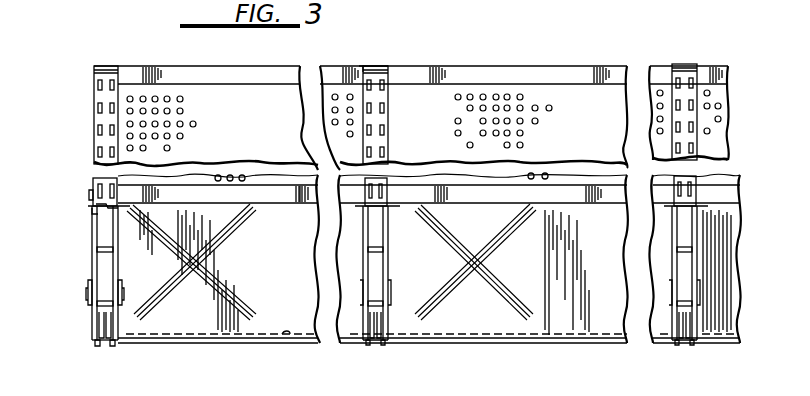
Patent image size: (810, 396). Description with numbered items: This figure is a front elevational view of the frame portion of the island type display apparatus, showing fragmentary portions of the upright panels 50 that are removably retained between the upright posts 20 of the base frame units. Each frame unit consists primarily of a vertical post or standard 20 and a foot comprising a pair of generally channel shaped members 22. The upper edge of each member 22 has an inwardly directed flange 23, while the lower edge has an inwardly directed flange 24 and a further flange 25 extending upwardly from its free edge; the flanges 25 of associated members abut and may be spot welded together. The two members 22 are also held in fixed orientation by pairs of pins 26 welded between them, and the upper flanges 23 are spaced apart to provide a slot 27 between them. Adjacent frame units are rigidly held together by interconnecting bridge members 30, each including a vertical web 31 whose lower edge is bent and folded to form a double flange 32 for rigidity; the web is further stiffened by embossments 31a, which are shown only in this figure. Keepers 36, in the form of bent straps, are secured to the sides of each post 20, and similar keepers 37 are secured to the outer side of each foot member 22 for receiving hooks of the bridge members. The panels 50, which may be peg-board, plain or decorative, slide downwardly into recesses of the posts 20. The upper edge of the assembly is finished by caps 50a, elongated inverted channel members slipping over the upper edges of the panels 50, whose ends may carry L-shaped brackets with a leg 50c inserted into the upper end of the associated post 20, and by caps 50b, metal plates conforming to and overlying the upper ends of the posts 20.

The vertical post 20 is at (94, 122).
The channel shaped member 22 is at (92, 233).
The inwardly directed flange 23 is at (95, 214).
The inwardly directed flange 24 is at (96, 342).
The further flange 25 is at (100, 328).
The pin 26 is at (108, 252).
The slot 27 is at (98, 205).
The interconnecting bridge member 30 is at (218, 354).
The vertical web 31 is at (435, 272).
The embossment 31a is at (215, 280).
The double flange 32 is at (289, 339).
The keeper 36 is at (91, 196).
The keeper 37 is at (86, 293).
The panel 50 is at (411, 118).
The finishing cap 50a is at (530, 62).
The finishing cap 50b is at (109, 66).
The leg 50c is at (366, 71).